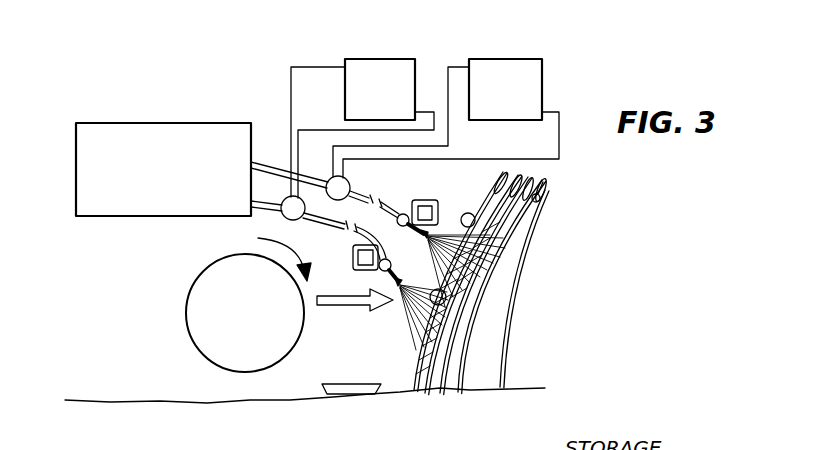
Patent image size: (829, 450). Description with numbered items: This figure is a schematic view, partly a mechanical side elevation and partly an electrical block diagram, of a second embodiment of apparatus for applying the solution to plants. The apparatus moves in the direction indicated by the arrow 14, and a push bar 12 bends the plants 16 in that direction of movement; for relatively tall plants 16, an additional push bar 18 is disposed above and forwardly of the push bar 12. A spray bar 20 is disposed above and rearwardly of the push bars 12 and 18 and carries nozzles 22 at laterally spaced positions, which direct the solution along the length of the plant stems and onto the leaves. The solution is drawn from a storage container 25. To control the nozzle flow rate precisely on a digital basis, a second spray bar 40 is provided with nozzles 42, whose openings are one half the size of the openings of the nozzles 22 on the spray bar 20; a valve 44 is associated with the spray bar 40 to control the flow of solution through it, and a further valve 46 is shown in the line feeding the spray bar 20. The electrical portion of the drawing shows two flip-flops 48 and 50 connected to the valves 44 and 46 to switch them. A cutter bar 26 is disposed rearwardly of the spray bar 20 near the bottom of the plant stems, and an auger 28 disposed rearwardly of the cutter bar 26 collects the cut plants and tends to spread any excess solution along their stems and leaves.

The push bar 12 is at (445, 301).
The arrow 14 is at (324, 307).
The plants 16 is at (536, 196).
The additional push bar 18 is at (470, 213).
The spray bar 20 is at (404, 214).
The nozzles 22 is at (415, 233).
The storage container 25 is at (83, 126).
The cutter bar 26 is at (320, 395).
The auger 28 is at (188, 300).
The second spray bar 40 is at (379, 272).
The nozzles 42 is at (399, 297).
The valve 44 is at (282, 216).
The valve 46 is at (349, 190).
The flip-flop 48 is at (399, 67).
The flip-flop 50 is at (531, 67).